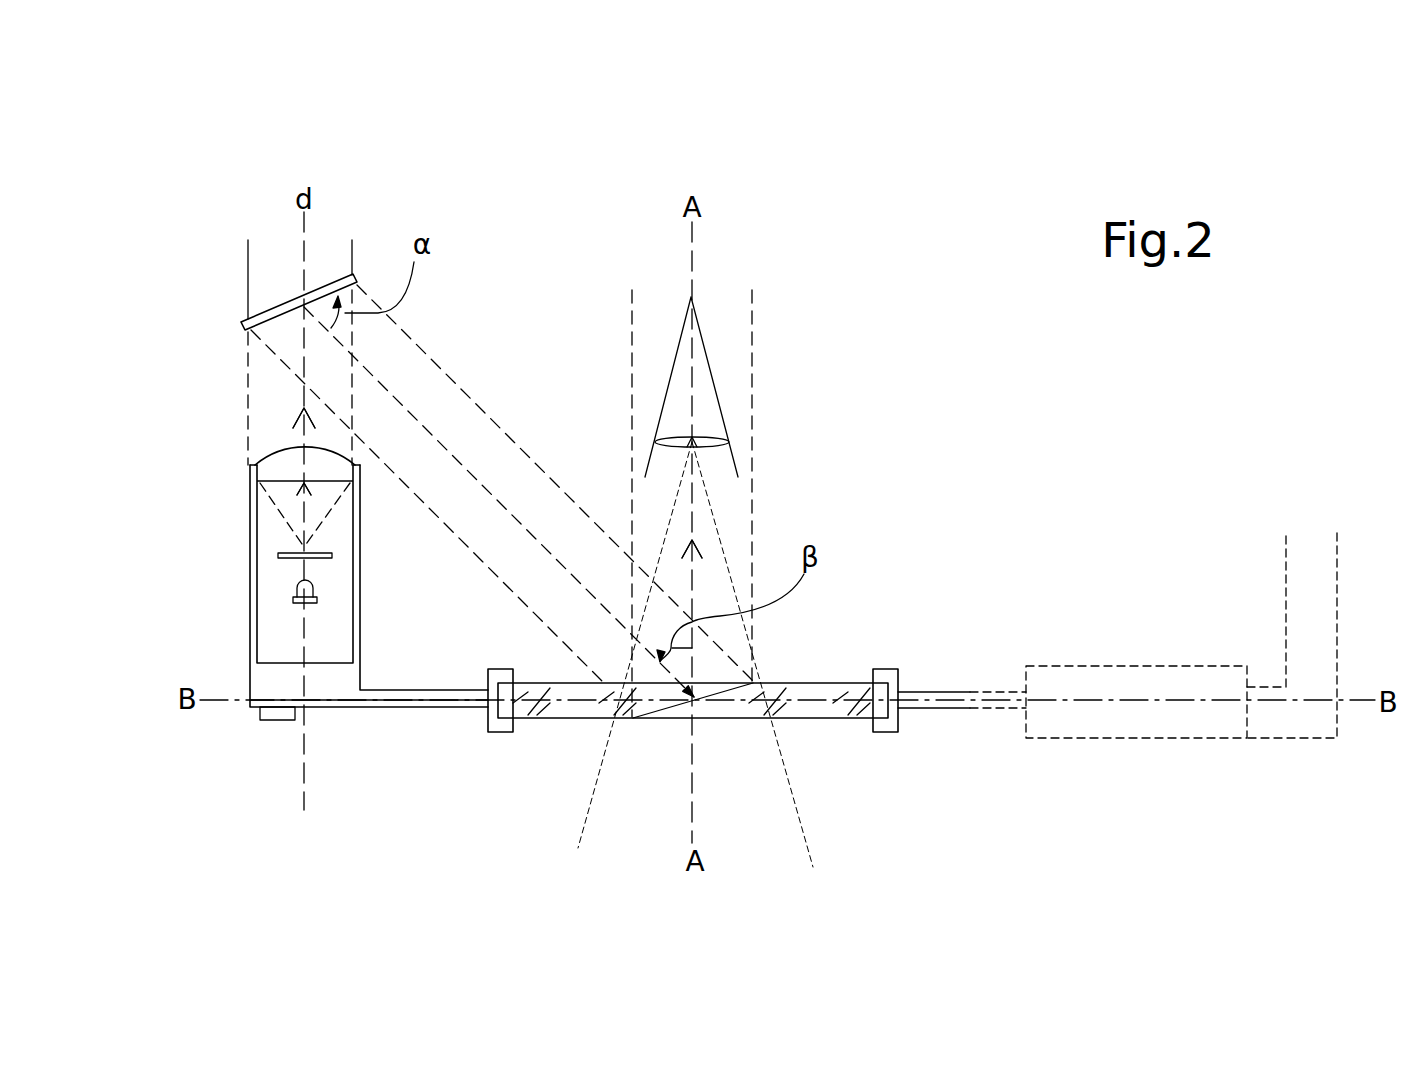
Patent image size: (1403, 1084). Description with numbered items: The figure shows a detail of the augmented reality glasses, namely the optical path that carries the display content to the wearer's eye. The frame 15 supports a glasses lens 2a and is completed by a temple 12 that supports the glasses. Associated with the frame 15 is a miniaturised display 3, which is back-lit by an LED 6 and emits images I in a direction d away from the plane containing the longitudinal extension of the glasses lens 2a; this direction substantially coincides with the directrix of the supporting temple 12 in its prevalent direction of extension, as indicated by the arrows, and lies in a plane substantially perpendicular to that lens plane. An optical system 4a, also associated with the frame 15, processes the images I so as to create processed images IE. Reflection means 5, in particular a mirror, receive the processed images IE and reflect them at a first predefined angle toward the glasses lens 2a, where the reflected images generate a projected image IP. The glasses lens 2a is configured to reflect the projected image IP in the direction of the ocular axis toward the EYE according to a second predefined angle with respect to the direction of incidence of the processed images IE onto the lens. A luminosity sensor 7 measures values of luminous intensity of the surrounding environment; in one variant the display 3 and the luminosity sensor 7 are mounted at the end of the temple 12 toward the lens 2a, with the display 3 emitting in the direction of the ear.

The glasses lens 2a is at (831, 718).
The miniaturised display 3 is at (279, 556).
The optical system 4a is at (258, 447).
The reflection means 5 is at (280, 307).
The LED 6 is at (293, 591).
The luminosity sensor 7 is at (268, 722).
The temple 12 is at (277, 428).
The frame 15 is at (249, 523).
The eye EYE is at (707, 410).
The processed images IE is at (304, 408).
The images I is at (304, 490).
The projected image IP is at (692, 540).